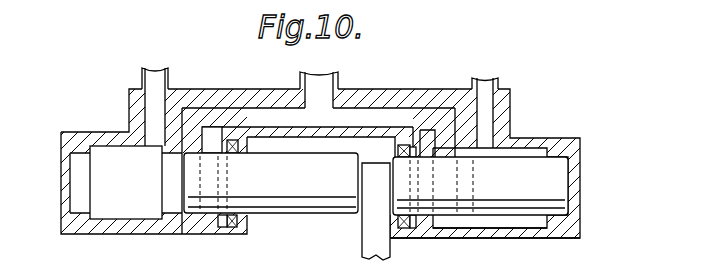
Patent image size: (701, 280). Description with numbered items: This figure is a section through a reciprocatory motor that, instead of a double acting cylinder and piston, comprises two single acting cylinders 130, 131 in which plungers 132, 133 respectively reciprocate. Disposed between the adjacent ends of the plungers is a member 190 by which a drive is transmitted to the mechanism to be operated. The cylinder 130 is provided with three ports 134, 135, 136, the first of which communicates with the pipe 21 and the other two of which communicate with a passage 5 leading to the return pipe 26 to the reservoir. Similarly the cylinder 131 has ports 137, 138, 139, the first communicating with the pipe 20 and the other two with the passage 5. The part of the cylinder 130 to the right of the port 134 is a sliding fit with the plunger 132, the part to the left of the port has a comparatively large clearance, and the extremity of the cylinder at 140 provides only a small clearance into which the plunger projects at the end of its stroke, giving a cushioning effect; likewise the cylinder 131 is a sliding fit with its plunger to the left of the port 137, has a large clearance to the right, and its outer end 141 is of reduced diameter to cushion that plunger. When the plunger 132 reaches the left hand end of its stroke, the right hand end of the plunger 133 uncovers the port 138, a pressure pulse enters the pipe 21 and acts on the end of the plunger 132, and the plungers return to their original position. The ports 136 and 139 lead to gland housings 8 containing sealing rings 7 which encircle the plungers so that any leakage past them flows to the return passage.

The passage 5 is at (372, 104).
The sealing rings 7 is at (244, 219).
The gland housings 8 is at (219, 227).
The pipe 20 is at (486, 83).
The pipe 21 is at (157, 78).
The return pipe 26 is at (354, 119).
The single acting cylinder 130 is at (137, 227).
The single acting cylinder 131 is at (503, 228).
The plunger 132 is at (297, 188).
The plunger 133 is at (493, 189).
The port 134 is at (188, 140).
The port 135 is at (228, 139).
The port 136 is at (272, 86).
The port 137 is at (500, 148).
The port 138 is at (480, 136).
The port 139 is at (415, 133).
The cylinder extremity 140 is at (82, 192).
The outer end 141 is at (555, 228).
The member 190 is at (370, 227).